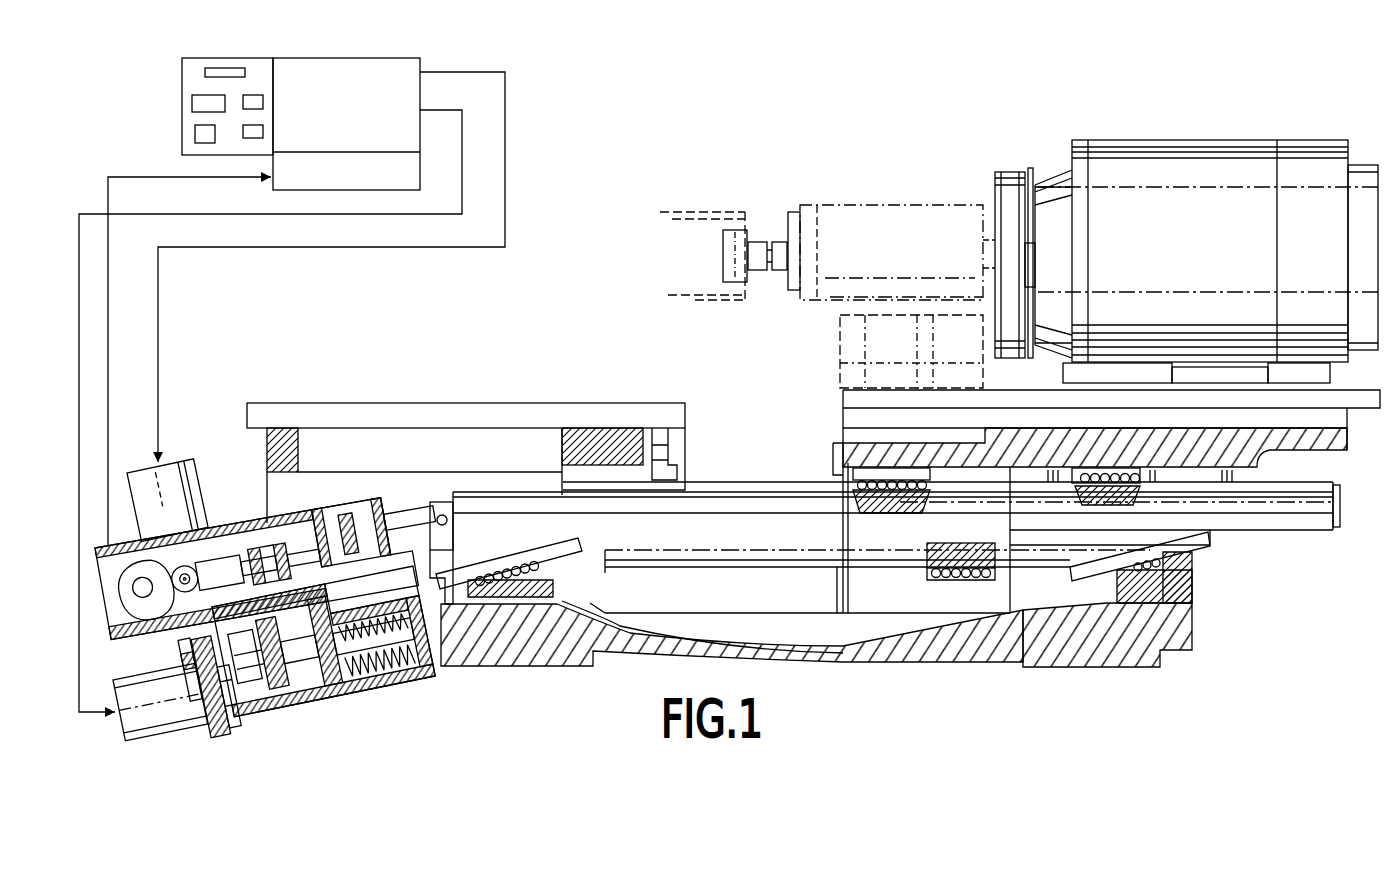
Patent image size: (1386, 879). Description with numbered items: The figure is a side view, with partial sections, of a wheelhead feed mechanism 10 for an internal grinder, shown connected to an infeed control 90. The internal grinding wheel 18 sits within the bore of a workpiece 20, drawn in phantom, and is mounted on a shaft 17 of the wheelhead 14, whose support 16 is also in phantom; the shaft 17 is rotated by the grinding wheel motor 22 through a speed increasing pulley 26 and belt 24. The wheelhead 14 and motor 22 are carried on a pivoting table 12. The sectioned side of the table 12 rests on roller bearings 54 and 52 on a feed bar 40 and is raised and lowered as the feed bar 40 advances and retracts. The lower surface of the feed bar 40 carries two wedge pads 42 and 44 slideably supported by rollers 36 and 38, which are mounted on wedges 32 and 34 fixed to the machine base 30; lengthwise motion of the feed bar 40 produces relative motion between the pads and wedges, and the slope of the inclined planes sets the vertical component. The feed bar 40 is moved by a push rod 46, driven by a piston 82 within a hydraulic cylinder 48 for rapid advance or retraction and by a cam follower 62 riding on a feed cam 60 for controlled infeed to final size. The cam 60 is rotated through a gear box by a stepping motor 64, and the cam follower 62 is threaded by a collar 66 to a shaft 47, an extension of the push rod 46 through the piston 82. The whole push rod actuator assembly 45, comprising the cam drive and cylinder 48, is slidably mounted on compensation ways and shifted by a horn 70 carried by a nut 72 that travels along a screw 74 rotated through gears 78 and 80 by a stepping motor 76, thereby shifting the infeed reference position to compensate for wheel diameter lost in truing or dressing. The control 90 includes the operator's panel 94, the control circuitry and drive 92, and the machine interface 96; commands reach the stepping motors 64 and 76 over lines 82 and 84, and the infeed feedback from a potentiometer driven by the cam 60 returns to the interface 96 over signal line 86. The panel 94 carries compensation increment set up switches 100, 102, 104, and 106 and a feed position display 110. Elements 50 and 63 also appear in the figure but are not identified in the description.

The wheelhead feed mechanism 10 is at (774, 158).
The pivoting table 12 is at (843, 397).
The wheelhead 14 is at (853, 206).
The support 16 is at (840, 343).
The shaft 17 is at (757, 242).
The internal grinding wheel 18 is at (723, 241).
The workpiece 20 is at (703, 212).
The grinding wheel motor 22 is at (1128, 140).
The belt 24 is at (1008, 172).
The speed increasing pulley 26 is at (1031, 170).
The machine base 30 is at (556, 668).
The wedge 32 is at (555, 589).
The wedge 34 is at (1192, 596).
The roller 36 is at (1193, 565).
The roller 38 is at (540, 558).
The feed bar 40 is at (472, 496).
The wedge pad 42 is at (580, 546).
The wedge pad 44 is at (1086, 581).
The push rod actuator assembly 45 is at (347, 486).
The push rod 46 is at (395, 510).
The shaft 47 is at (237, 642).
The hydraulic cylinder 48 is at (320, 515).
The ball nut 50 is at (998, 577).
The roller bearing 52 is at (1148, 478).
The roller bearing 54 is at (855, 472).
The feed cam 60 is at (136, 600).
The cam follower 62 is at (178, 566).
The bracket 63 is at (436, 577).
The stepping motor 64 is at (187, 462).
The collar 66 is at (250, 540).
The horn 70 is at (324, 678).
The nut 72 is at (306, 617).
The screw 74 is at (258, 690).
The stepping motor 76 is at (150, 736).
The gear 78 is at (238, 706).
The gear 80 is at (182, 656).
The piston 82 is at (478, 71).
The line 84 is at (441, 110).
The signal line 86 is at (110, 380).
The infeed control 90 is at (371, 50).
The control circuitry and drive 92 is at (404, 58).
The operator's panel 94 is at (256, 58).
The machine interface 96 is at (275, 190).
The compensation increment set up switch 100 is at (192, 103).
The compensation increment set up switch 102 is at (263, 102).
The compensation increment set up switch 104 is at (195, 130).
The compensation increment set up switch 106 is at (263, 132).
The feed position display 110 is at (205, 72).